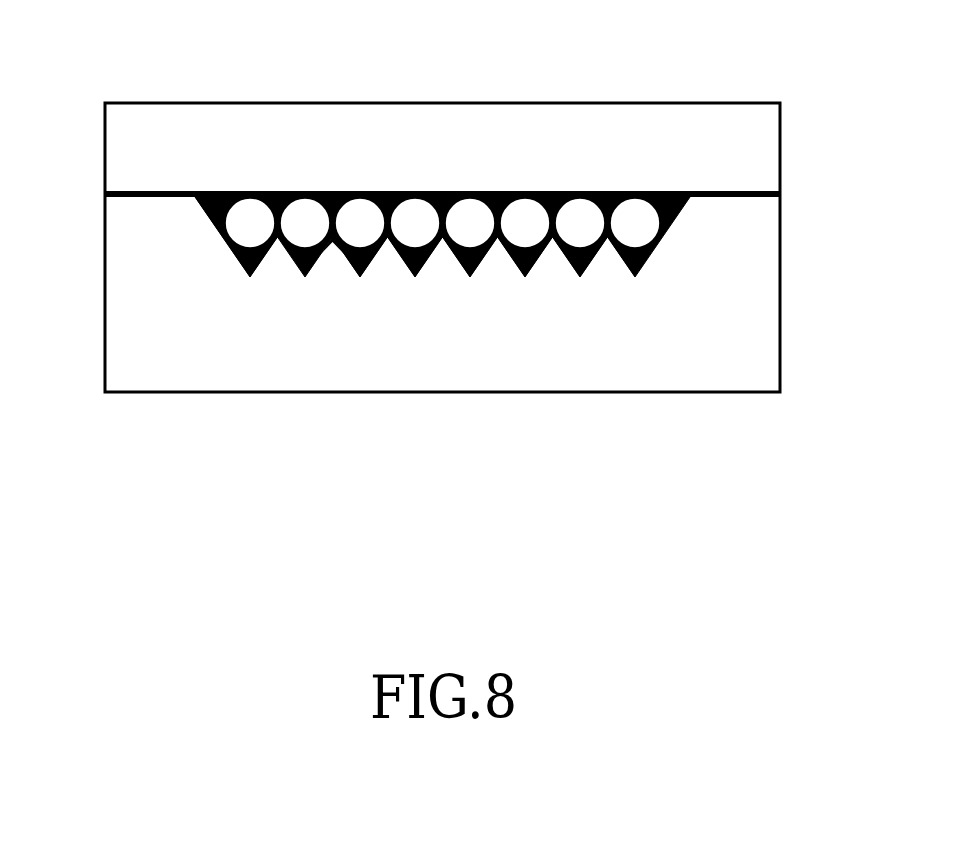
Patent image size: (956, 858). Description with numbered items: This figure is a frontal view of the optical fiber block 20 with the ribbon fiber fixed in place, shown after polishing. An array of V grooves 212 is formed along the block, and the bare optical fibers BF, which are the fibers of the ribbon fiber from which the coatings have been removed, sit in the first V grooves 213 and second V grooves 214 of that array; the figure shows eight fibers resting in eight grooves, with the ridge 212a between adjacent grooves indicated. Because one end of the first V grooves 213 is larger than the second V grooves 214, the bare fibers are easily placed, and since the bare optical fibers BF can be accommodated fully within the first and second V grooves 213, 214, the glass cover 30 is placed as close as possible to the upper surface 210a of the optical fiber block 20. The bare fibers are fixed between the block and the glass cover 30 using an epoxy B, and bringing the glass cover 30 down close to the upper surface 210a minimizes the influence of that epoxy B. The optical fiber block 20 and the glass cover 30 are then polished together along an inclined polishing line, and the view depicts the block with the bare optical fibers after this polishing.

The optical fiber block 20 is at (732, 260).
The glass cover 30 is at (732, 137).
The upper surface of the optical fiber block 210a is at (732, 190).
The array of V grooves 212 is at (250, 300).
The ridge between V-grooves 212a is at (340, 248).
The first V grooves 213 is at (245, 262).
The second V grooves 214 is at (580, 283).
The epoxy B is at (208, 193).
The bare optical fibers BF is at (302, 215).